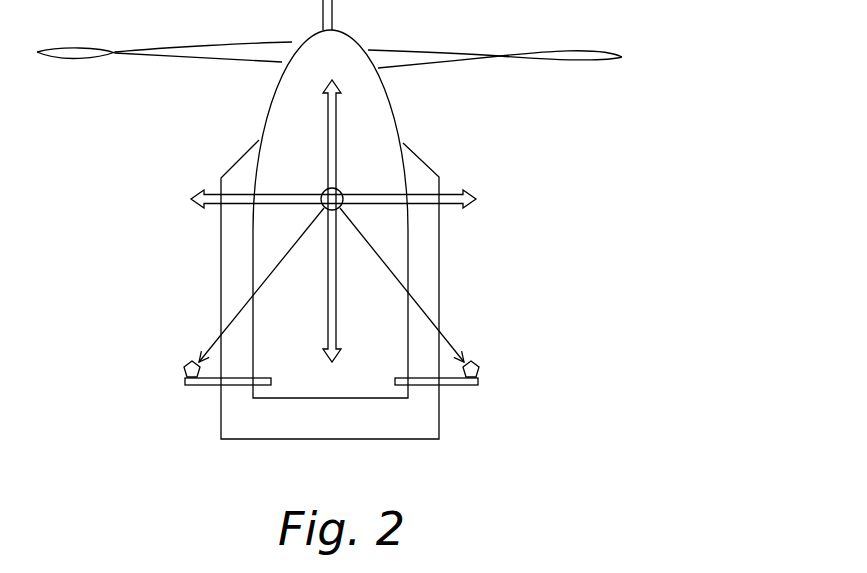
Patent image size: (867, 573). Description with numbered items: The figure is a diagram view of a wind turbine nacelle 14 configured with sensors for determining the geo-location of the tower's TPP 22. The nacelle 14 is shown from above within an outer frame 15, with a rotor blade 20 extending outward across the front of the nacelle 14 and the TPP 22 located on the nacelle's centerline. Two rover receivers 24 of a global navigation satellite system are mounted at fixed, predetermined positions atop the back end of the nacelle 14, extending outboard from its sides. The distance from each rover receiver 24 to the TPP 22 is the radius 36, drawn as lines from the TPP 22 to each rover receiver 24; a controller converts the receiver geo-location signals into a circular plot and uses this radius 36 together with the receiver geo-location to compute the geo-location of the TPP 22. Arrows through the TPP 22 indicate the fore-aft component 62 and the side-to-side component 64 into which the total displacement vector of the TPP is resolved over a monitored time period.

The rotor blade 20 is at (513, 52).
The nacelle 14 is at (403, 133).
The airframe with landing gear 15 is at (385, 440).
The fore-aft component 62 is at (328, 133).
The side-to-side component 64 is at (213, 193).
The TPP 22 is at (341, 191).
The radius 36 is at (260, 277).
The rover receiver 24 is at (181, 375).